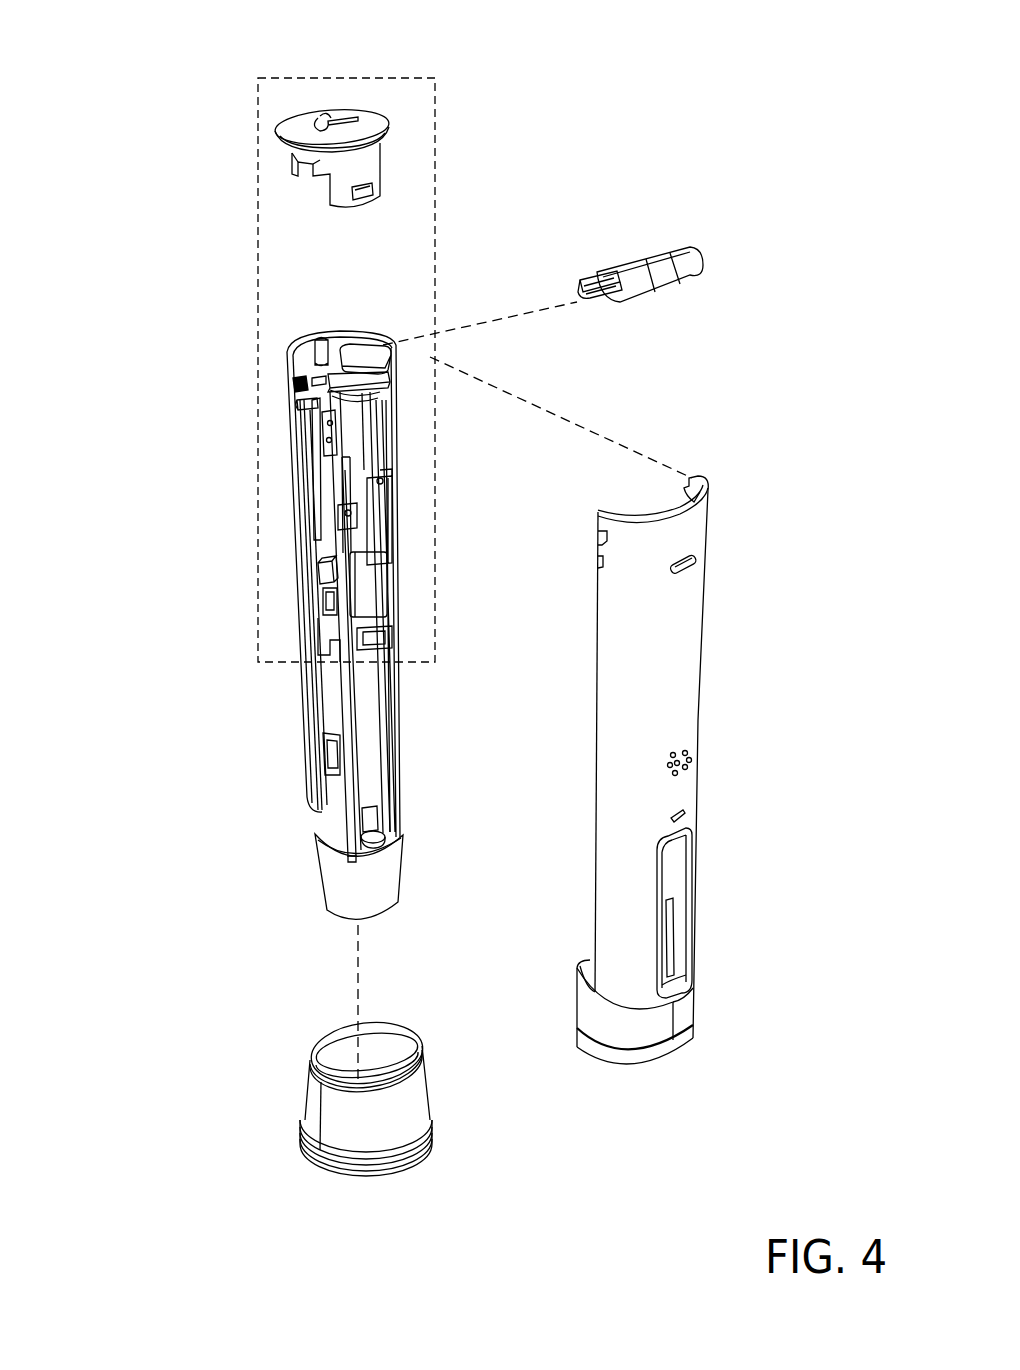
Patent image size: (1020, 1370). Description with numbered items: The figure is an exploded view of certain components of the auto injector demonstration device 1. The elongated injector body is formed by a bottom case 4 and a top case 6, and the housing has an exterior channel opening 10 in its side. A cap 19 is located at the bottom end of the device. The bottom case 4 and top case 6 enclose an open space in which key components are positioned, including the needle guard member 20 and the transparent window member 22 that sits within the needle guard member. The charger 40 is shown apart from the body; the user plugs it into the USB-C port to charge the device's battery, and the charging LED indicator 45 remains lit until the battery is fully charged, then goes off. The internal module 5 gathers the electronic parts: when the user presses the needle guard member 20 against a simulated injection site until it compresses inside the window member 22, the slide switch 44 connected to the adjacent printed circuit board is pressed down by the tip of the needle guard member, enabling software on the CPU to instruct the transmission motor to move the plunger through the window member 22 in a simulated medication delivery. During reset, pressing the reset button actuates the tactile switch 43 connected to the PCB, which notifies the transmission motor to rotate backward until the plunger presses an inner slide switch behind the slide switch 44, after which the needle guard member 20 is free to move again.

The auto injector demonstration device 1 is at (126, 98).
The bottom case 4 is at (672, 651).
The internal module 5 is at (258, 234).
The top case 6 is at (303, 742).
The exterior channel opening 10 is at (662, 890).
The cap 19 is at (337, 1105).
The needle guard member 20 is at (335, 873).
The transparent window member 22 is at (368, 756).
The charger 40 is at (628, 262).
The tactile switch 43 is at (320, 362).
The slide switch 44 is at (320, 576).
The charging LED indicator 45 is at (305, 336).